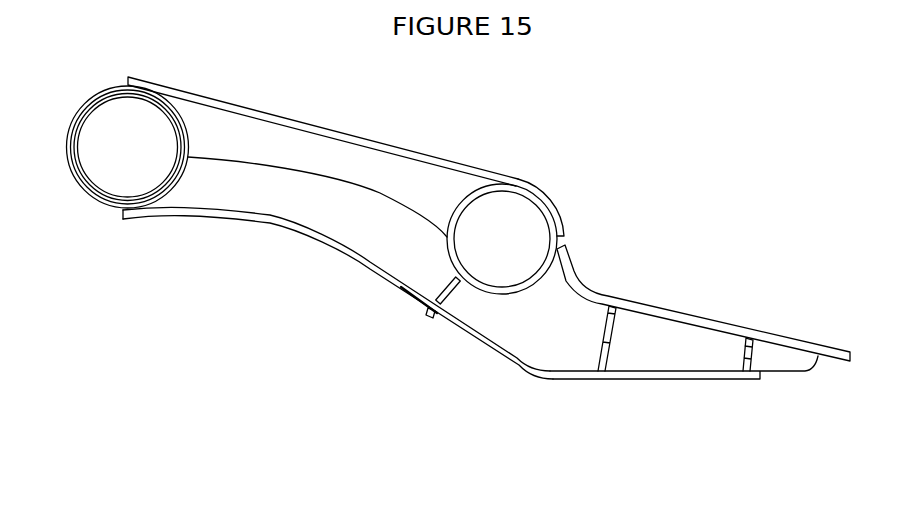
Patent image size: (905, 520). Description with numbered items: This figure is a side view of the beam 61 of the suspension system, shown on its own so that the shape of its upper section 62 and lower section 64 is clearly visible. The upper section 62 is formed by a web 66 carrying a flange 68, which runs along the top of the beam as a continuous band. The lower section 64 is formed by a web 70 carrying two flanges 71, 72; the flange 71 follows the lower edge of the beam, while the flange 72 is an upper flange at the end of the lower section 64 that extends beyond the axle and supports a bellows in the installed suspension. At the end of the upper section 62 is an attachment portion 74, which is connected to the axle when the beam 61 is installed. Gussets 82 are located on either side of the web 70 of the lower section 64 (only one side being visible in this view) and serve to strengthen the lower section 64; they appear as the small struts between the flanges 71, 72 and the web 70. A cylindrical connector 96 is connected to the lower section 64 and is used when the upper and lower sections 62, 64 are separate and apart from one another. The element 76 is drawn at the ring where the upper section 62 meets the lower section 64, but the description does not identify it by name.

The beam 61 is at (225, 193).
The upper section 62 is at (443, 190).
The lower section 64 is at (393, 245).
The web 66 is at (252, 137).
The flange 68 is at (373, 138).
The web 70 is at (312, 212).
The flange 71 is at (498, 355).
The flange 72 is at (695, 322).
The attachment portion 74 is at (546, 208).
The ring 76 is at (520, 293).
The gussets 82 is at (450, 292).
The cylindrical connector 96 is at (74, 172).